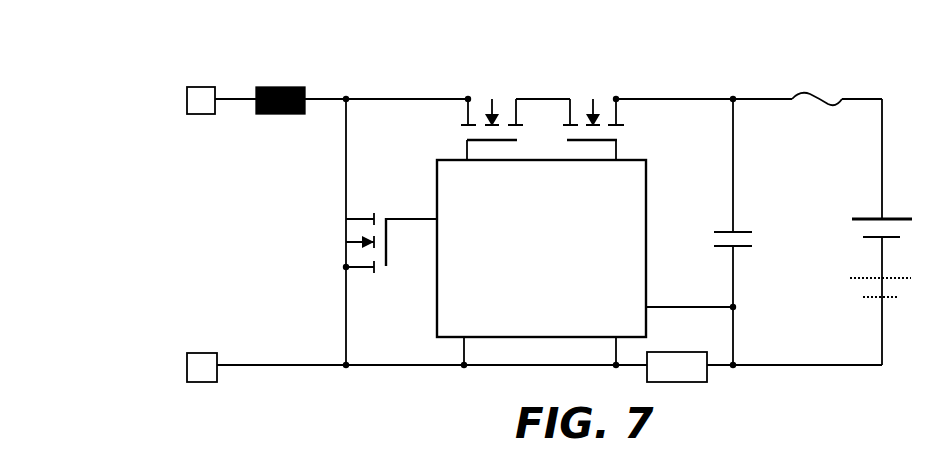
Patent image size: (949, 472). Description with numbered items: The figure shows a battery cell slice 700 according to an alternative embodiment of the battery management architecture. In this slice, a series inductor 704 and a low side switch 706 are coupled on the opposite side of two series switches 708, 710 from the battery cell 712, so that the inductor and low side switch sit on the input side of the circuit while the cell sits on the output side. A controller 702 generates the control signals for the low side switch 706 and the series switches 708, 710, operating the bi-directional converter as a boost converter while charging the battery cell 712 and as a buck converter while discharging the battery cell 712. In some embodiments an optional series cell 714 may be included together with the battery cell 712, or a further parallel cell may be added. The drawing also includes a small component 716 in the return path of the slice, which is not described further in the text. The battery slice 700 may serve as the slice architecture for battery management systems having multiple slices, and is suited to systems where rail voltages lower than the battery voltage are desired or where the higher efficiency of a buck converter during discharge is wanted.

The battery cell slice 700 is at (134, 90).
The controller 702 is at (437, 195).
The series inductor 704 is at (282, 87).
The low side switch 706 is at (343, 238).
The series switch 708 is at (491, 100).
The series switch 710 is at (593, 100).
The battery cell 712 is at (862, 218).
The optional series cell 714 is at (851, 276).
The sense resistor 716 is at (707, 372).